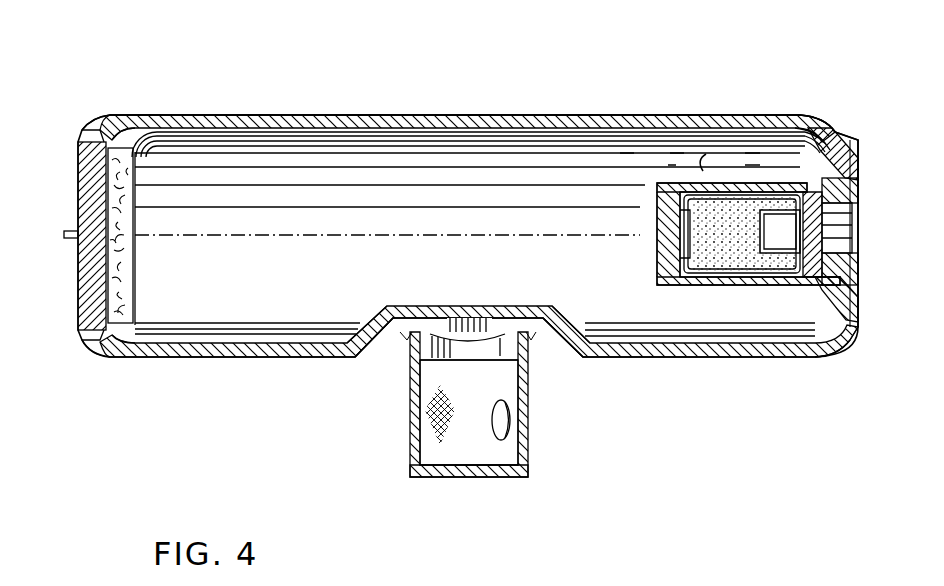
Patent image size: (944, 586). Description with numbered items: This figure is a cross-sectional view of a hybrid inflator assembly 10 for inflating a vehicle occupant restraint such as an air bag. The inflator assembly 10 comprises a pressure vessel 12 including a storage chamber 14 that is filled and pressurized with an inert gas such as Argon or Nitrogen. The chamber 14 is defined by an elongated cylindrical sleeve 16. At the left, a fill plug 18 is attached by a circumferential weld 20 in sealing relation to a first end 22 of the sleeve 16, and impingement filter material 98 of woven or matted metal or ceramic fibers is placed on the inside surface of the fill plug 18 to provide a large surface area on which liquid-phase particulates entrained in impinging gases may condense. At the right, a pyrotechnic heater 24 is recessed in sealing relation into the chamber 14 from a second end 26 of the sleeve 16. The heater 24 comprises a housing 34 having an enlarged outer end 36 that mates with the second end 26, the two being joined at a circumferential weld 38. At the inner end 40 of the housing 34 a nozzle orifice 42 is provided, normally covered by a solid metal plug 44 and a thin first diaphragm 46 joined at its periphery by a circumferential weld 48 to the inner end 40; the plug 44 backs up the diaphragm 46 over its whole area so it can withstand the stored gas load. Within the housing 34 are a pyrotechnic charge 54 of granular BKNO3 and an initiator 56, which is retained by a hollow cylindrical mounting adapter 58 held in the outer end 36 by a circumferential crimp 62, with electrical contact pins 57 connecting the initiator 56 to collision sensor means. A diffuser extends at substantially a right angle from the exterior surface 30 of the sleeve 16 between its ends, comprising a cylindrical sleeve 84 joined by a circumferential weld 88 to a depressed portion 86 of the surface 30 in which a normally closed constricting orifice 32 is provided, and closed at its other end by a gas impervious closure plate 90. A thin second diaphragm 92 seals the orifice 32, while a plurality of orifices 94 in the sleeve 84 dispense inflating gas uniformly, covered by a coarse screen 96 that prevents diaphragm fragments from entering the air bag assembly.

The hybrid inflator assembly 10 is at (497, 84).
The pressure vessel 12 is at (652, 114).
The storage chamber 14 is at (433, 143).
The elongated cylindrical sleeve 16 is at (328, 114).
The fill plug 18 is at (78, 150).
The circumferential weld 20 is at (88, 348).
The first end of sleeve 22 is at (110, 126).
The pyrotechnic heater 24 is at (718, 157).
The second end of sleeve 26 is at (815, 123).
The exterior surface of sleeve 30 is at (205, 360).
The constricting orifice 32 is at (488, 325).
The housing 34 is at (774, 181).
The enlarged outer end of housing 36 is at (855, 150).
The circumferential weld 38 is at (840, 345).
The inner end of housing 40 is at (660, 188).
The nozzle orifice 42 is at (665, 243).
The solid metal plug 44 is at (665, 228).
The first diaphragm 46 is at (660, 265).
The circumferential weld 48 is at (668, 285).
The pyrotechnic charge 54 is at (730, 255).
The initiator 56 is at (775, 238).
The electrical contact pins 57 is at (842, 240).
The mounting adapter 58 is at (852, 315).
The circumferential crimp 62 is at (856, 192).
The cylindrical sleeve of diffuser 84 is at (415, 432).
The depressed portion 86 is at (382, 340).
The circumferential weld 88 is at (540, 335).
The closure plate 90 is at (490, 480).
The second diaphragm 92 is at (442, 378).
The diffuser orifices 94 is at (510, 422).
The coarse screen 96 is at (445, 455).
The impingement filter material 98 is at (130, 288).